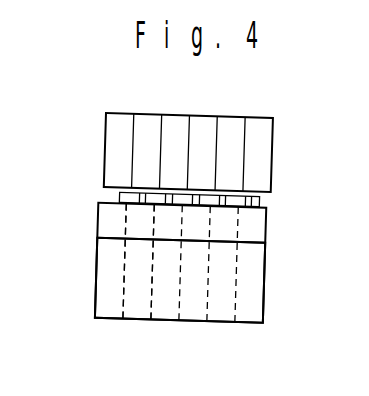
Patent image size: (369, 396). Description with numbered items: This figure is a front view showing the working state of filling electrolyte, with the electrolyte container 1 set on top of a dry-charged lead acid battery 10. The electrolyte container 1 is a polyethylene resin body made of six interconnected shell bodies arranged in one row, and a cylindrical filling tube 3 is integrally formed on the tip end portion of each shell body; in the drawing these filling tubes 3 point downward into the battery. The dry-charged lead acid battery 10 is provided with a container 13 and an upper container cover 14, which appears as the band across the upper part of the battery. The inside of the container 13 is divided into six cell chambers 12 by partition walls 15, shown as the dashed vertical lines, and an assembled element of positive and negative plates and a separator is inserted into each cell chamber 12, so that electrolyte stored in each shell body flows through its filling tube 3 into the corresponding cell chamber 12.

The electrolyte container 1 is at (95, 141).
The filling tube 3 is at (112, 194).
The dry-charged lead acid battery 10 is at (90, 262).
The cell chamber 12 is at (115, 307).
The container 13 is at (268, 288).
The upper container cover 14 is at (268, 230).
The partition wall 15 is at (129, 275).